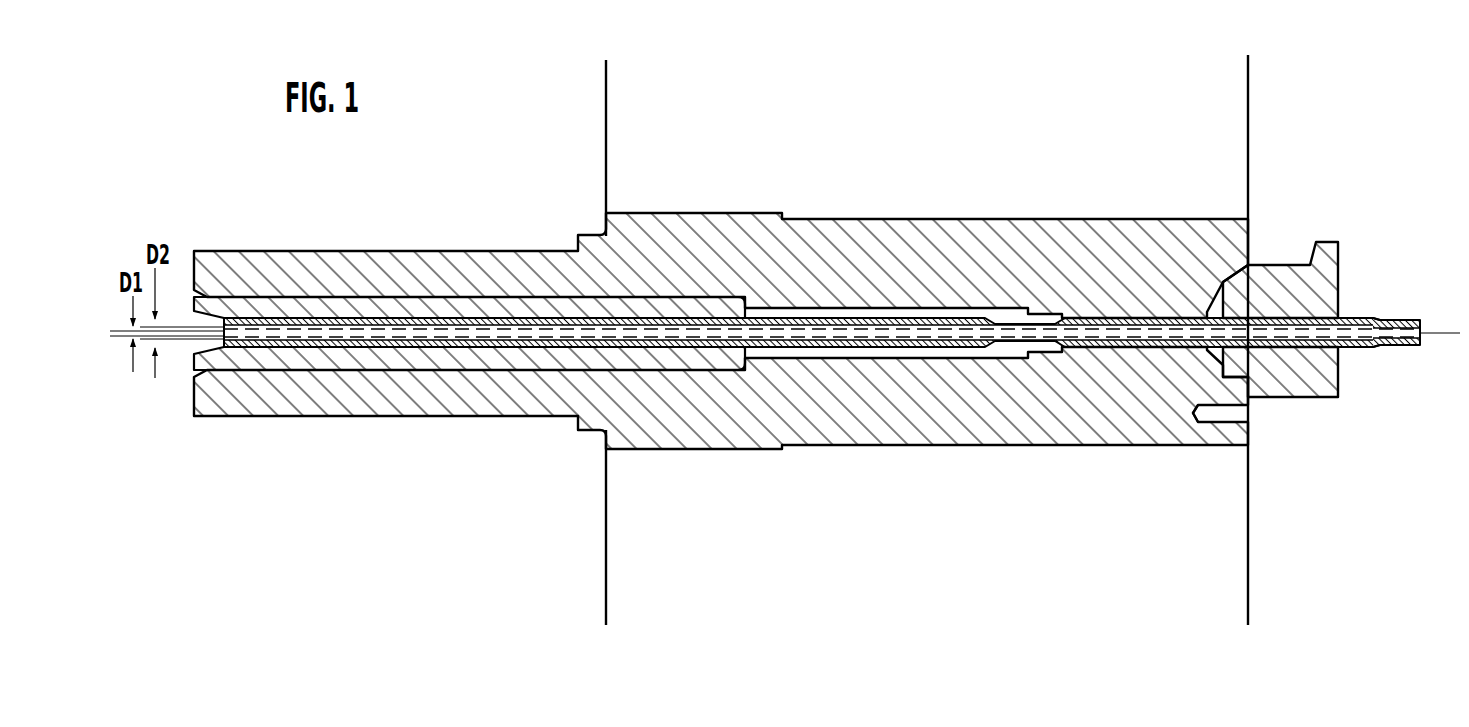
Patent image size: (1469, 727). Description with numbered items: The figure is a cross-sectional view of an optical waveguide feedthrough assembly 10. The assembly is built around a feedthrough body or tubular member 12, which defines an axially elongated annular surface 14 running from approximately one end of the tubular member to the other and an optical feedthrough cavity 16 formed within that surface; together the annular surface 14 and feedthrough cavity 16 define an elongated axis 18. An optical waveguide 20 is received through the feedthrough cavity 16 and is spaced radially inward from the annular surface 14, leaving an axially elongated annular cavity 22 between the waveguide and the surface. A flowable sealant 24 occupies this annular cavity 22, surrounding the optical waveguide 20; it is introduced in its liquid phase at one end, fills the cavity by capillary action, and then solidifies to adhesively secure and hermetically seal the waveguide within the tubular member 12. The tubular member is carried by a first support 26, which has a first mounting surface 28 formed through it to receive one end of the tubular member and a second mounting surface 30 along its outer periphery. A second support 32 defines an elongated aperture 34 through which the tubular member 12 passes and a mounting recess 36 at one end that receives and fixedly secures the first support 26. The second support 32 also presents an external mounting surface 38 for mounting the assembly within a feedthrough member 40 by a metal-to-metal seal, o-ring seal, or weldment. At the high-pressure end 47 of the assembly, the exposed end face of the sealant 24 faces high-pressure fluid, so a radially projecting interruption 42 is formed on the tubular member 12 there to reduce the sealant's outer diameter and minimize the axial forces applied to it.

The optical waveguide feedthrough assembly 10 is at (663, 190).
The tubular member 12 is at (1065, 322).
The annular surface 14 is at (1118, 325).
The optical feedthrough cavity 16 is at (1143, 334).
The elongated axis 18 is at (1457, 335).
The optical waveguide 20 is at (1430, 330).
The annular cavity 22 is at (811, 334).
The sealant 24 is at (827, 330).
The first support 26 is at (1318, 280).
The first mounting surface 28 is at (1338, 317).
The second mounting surface 30 is at (1340, 378).
The second support 32 is at (1013, 432).
The elongated aperture 34 is at (1100, 346).
The mounting recess 36 is at (1256, 374).
The external mounting surface 38 is at (900, 445).
The feedthrough member 40 is at (1228, 92).
The radially projecting interruption 42 is at (1008, 330).
The high-pressure end 47 is at (205, 343).